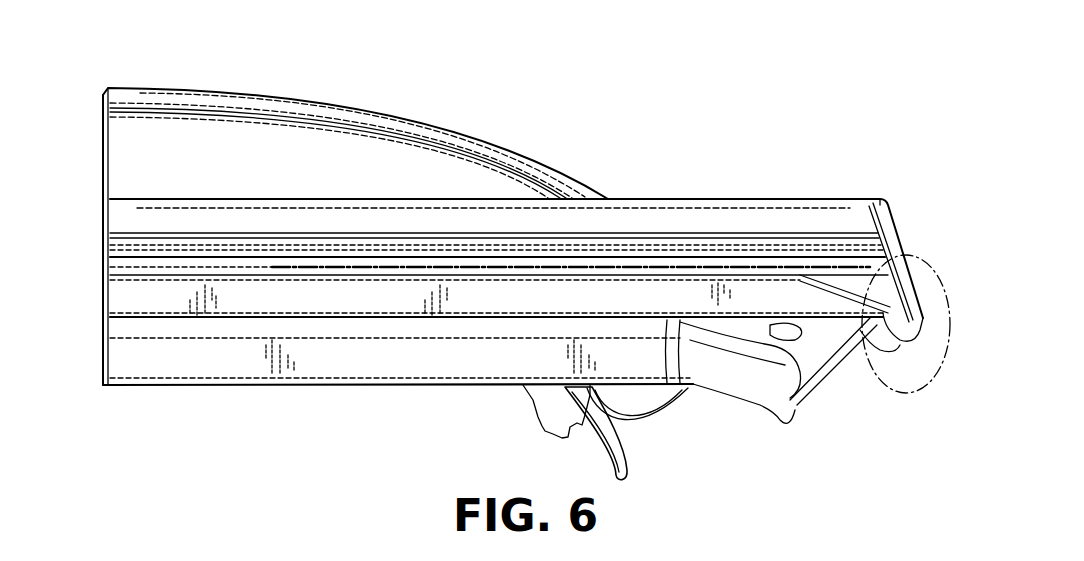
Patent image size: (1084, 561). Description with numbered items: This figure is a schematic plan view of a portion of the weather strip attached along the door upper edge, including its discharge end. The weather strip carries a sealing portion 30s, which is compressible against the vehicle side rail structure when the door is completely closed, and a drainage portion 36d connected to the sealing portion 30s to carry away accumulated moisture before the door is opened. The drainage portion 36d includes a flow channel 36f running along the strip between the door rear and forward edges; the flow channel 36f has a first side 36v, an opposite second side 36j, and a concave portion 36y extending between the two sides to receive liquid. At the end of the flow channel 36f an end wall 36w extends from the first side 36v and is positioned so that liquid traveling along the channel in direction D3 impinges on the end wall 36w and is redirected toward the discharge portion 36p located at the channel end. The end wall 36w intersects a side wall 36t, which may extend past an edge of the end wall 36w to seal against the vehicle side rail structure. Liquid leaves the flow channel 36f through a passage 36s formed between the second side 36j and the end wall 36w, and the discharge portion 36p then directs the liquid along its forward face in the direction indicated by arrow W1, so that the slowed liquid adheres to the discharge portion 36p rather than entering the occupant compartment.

The sealing portion 30s is at (325, 150).
The flow channel 36f is at (223, 248).
The concave portion 36y is at (163, 268).
The drainage portion 36d is at (275, 290).
The second side 36j is at (237, 292).
The first side 36v is at (577, 242).
The side wall 36t is at (705, 220).
The end wall 36w is at (900, 233).
The arrow indicating direction of liquid flow along forward face W1 is at (852, 280).
The passage 36s is at (935, 353).
The discharge portion 36p is at (925, 393).
The direction of liquid impinging on end wall D3 is at (95, 280).